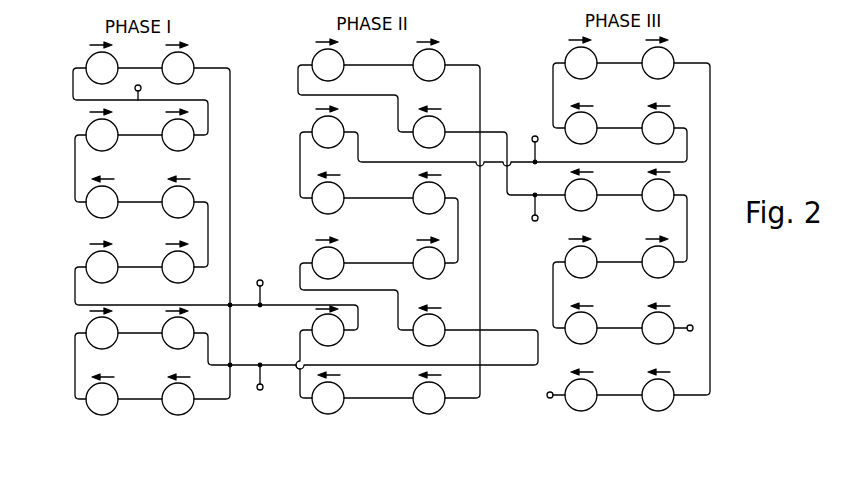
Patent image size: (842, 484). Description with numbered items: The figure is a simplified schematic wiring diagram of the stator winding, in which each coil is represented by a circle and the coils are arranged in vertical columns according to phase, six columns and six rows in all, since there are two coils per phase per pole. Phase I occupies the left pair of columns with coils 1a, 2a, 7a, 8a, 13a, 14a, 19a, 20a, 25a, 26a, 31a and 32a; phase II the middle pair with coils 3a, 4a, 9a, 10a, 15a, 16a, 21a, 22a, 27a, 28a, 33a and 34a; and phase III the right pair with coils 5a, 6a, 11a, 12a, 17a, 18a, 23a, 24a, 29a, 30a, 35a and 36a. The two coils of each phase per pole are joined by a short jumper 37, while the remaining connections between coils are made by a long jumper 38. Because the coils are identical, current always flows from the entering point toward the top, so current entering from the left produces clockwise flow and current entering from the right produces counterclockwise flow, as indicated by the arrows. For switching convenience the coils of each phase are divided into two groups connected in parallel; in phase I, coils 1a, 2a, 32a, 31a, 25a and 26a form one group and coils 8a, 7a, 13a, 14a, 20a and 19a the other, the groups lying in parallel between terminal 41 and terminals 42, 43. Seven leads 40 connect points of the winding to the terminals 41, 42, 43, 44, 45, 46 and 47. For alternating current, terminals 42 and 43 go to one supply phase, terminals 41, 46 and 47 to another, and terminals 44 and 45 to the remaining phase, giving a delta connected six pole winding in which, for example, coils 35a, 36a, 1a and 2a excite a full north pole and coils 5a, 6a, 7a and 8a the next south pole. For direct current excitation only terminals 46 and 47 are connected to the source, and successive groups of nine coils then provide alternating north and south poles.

The coil 1a is at (102, 68).
The coil 2a is at (178, 68).
The coil 3a is at (328, 65).
The coil 4a is at (429, 65).
The coil 5a is at (581, 63).
The coil 6a is at (658, 63).
The coil 7a is at (102, 135).
The coil 8a is at (178, 135).
The coil 9a is at (328, 132).
The coil 10a is at (429, 132).
The coil 11a is at (581, 128).
The coil 12a is at (658, 128).
The coil 13a is at (102, 202).
The coil 14a is at (178, 202).
The coil 15a is at (328, 198).
The coil 16a is at (429, 198).
The coil 17a is at (581, 195).
The coil 18a is at (658, 195).
The coil 19a is at (102, 267).
The coil 20a is at (178, 267).
The coil 21a is at (328, 263).
The coil 22a is at (429, 263).
The coil 23a is at (581, 262).
The coil 24a is at (658, 262).
The coil 25a is at (102, 333).
The coil 26a is at (178, 333).
The coil 27a is at (328, 330).
The coil 28a is at (429, 330).
The coil 29a is at (581, 328).
The coil 30a is at (658, 328).
The coil 31a is at (102, 399).
The coil 32a is at (178, 399).
The coil 33a is at (328, 398).
The coil 34a is at (429, 398).
The coil 35a is at (581, 395).
The coil 36a is at (658, 395).
The short jumper 37 is at (132, 66).
The long jumper 38 is at (122, 101).
The lead 40 is at (127, 88).
The terminal 41 is at (141, 88).
The terminal 42 is at (270, 293).
The terminal 43 is at (270, 377).
The terminal 44 is at (545, 207).
The terminal 45 is at (545, 149).
The terminal 46 is at (697, 319).
The terminal 47 is at (547, 395).